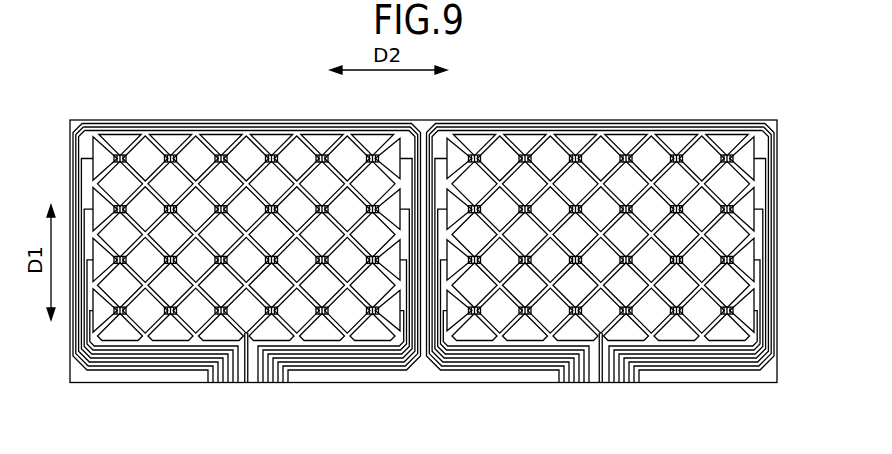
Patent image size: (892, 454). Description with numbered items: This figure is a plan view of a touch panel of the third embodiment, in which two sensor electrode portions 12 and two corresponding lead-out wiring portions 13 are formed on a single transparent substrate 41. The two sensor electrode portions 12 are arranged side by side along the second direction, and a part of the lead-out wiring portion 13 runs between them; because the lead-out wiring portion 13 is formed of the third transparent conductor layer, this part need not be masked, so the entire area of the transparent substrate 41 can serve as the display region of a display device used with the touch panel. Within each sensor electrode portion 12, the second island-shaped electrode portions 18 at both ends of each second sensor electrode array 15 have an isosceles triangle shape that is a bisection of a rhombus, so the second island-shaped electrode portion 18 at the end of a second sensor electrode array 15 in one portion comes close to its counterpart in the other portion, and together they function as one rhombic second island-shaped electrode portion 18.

The transparent substrate 41 is at (80, 120).
The sensor electrode portion 12 is at (239, 117).
The lead-out wiring portion 13 is at (89, 387).
The second sensor electrode array 15 is at (87, 155).
The second island-shaped electrode portion 18 is at (394, 153).